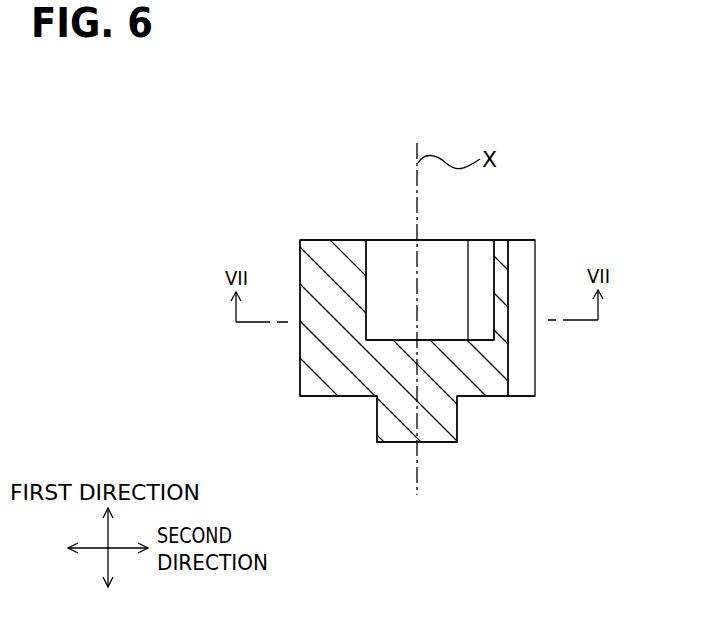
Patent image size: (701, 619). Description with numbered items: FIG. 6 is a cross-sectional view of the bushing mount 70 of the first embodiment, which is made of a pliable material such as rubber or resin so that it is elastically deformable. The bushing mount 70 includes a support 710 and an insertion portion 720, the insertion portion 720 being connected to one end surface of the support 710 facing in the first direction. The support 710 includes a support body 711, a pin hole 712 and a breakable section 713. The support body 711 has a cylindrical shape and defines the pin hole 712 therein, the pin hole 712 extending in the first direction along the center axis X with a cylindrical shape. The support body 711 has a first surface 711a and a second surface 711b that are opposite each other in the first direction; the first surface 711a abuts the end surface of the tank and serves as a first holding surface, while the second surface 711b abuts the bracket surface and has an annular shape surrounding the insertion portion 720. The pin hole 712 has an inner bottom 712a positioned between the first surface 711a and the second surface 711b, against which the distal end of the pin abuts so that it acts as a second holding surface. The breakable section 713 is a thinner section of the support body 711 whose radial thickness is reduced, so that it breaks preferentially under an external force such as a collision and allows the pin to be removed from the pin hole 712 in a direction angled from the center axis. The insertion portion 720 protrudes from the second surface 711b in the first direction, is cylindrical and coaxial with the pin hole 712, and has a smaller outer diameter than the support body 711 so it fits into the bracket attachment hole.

The bushing mount 70 is at (590, 190).
The support 710 is at (277, 238).
The support body 711 is at (320, 330).
The first surface 711a is at (333, 240).
The second surface 711b is at (317, 396).
The pin hole 712 is at (437, 273).
The inner bottom 712a is at (383, 333).
The breakable section 713 is at (503, 283).
The insertion portion 720 is at (429, 433).